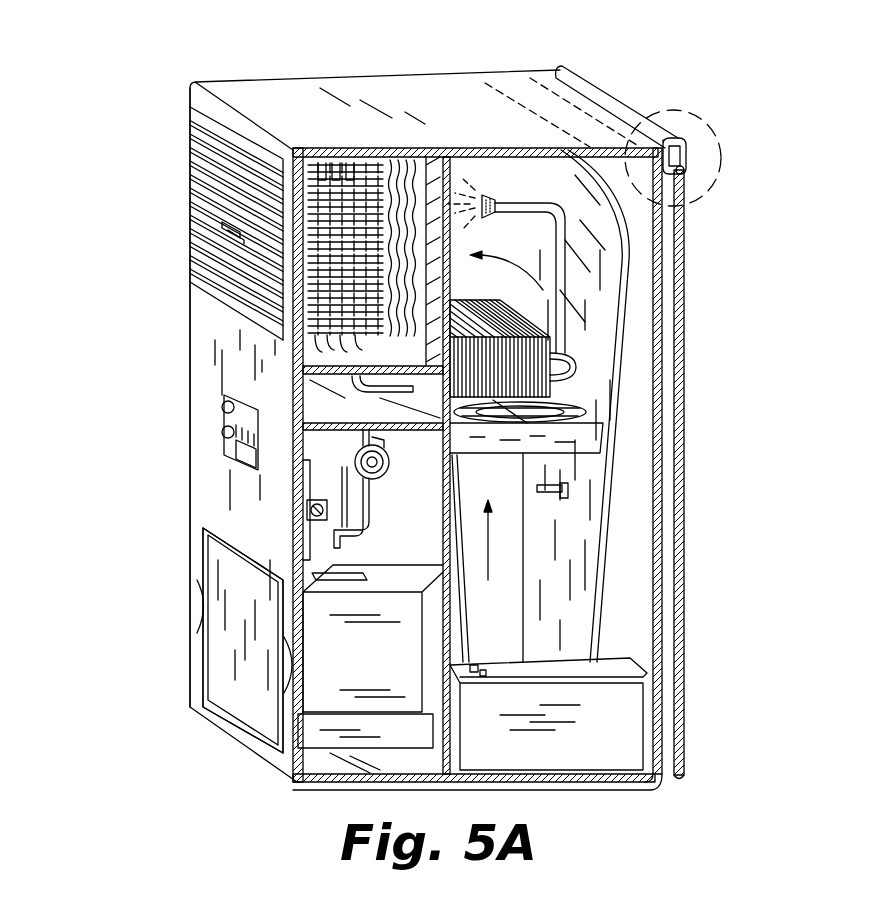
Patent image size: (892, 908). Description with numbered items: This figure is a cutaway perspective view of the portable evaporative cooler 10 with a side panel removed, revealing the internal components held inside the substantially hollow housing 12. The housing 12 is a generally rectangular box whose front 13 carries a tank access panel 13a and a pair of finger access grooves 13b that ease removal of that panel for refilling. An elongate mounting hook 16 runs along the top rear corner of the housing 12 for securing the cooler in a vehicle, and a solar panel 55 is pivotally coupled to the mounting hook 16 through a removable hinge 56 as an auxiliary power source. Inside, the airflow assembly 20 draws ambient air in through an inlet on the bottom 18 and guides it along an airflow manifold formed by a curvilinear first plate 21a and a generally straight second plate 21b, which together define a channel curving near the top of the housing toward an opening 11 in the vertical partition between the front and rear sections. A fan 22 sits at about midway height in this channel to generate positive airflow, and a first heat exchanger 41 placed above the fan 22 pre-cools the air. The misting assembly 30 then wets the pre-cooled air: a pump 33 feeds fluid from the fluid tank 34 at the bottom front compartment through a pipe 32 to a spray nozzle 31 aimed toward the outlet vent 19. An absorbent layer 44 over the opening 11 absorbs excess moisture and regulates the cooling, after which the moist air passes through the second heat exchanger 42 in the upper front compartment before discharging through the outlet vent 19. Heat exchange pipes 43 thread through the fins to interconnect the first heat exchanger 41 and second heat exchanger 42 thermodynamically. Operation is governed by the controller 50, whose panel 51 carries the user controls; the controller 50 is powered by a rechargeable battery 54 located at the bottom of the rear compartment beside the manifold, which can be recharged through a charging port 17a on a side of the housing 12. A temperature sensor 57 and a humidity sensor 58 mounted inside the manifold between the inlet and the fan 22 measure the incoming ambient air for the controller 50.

The portable evaporative cooler 10 is at (133, 58).
The opening 11 is at (402, 157).
The housing 12 is at (168, 287).
The front 13 is at (193, 347).
The tank access panel 13a is at (233, 687).
The finger access grooves 13b is at (180, 650).
The mounting hook 16 is at (604, 138).
The charging port 17a is at (307, 510).
The bottom 18 is at (608, 778).
The outlet vent 19 is at (160, 183).
The airflow assembly 20 is at (630, 572).
The first plate 21a is at (535, 307).
The second plate 21b is at (452, 617).
The fan 22 is at (603, 440).
The misting assembly 30 is at (577, 150).
The spray nozzle 31 is at (496, 202).
The pipe 32 is at (566, 232).
The pump 33 is at (407, 527).
The fluid tank 34 is at (404, 667).
The first heat exchanger 41 is at (568, 363).
The second heat exchanger 42 is at (367, 157).
The heat exchange pipes 43 is at (603, 395).
The absorbent layer 44 is at (416, 190).
The controller 50 is at (188, 420).
The panel 51 is at (250, 455).
The rechargeable battery 54 is at (551, 714).
The solar panel 55 is at (686, 270).
The removable hinge 56 is at (710, 170).
The temperature sensor 57 is at (550, 480).
The humidity sensor 58 is at (552, 500).